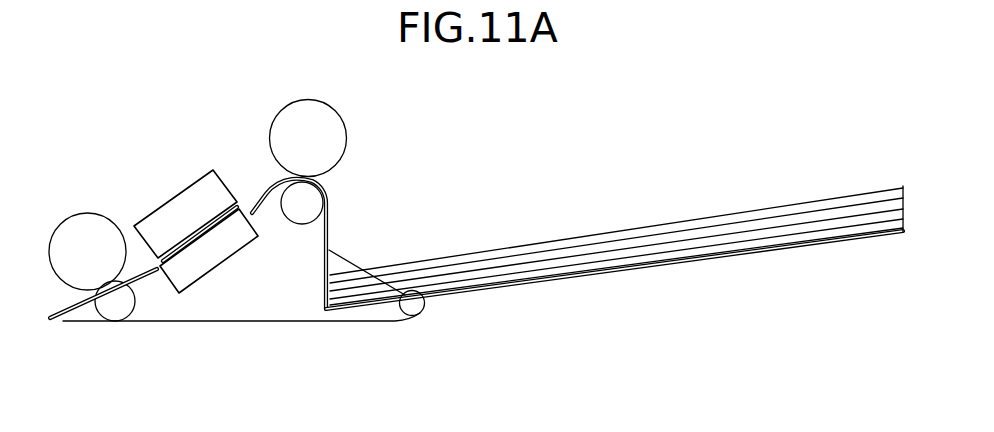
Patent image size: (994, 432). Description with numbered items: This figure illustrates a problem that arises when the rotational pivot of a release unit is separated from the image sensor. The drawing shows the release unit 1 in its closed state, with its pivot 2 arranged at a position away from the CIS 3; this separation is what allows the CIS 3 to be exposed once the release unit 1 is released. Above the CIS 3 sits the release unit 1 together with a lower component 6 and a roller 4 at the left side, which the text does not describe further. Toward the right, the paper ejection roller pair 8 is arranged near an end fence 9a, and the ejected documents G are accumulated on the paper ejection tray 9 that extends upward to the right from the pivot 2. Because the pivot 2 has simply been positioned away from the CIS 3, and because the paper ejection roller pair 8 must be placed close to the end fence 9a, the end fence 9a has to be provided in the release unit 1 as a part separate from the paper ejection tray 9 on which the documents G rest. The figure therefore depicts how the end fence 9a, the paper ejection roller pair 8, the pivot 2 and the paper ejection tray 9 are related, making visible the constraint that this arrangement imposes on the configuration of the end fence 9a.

The release unit 1 is at (156, 348).
The pivot 2 is at (423, 313).
The CIS 3 is at (206, 187).
The feed roller 4 is at (70, 219).
The lower unit 6 is at (200, 267).
The paper ejection roller pair 8 is at (362, 173).
The paper ejection tray 9 is at (630, 274).
The end fence 9a is at (330, 226).
The documents G is at (660, 232).